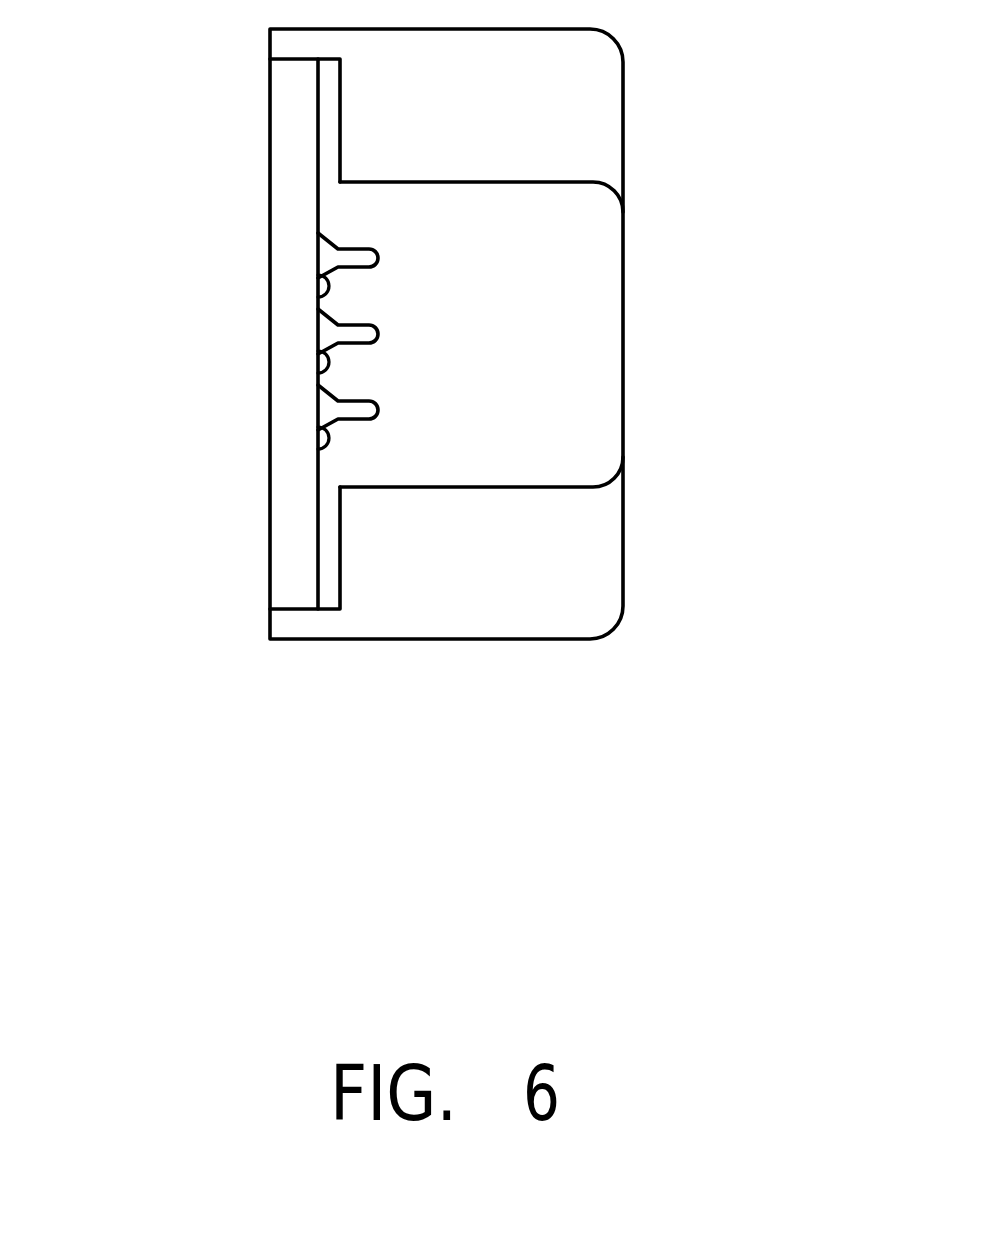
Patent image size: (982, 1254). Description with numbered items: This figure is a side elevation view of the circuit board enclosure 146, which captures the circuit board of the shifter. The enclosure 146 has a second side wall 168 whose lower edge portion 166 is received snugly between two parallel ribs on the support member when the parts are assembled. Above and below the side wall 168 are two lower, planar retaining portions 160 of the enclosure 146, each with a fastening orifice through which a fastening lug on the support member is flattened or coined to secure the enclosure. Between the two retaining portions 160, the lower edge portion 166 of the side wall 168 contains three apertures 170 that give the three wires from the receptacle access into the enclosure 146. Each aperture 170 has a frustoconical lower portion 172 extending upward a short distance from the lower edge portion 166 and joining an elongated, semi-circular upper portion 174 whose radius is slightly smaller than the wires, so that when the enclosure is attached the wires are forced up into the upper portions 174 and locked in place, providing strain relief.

The circuit board enclosure 146 is at (623, 240).
The retaining portions 160 is at (330, 92).
The lower edge portion 166 is at (318, 200).
The second side wall 168 is at (592, 403).
The apertures 170 is at (318, 251).
The frustoconical lower portion 172 is at (322, 299).
The semi-circular upper portion 174 is at (378, 259).